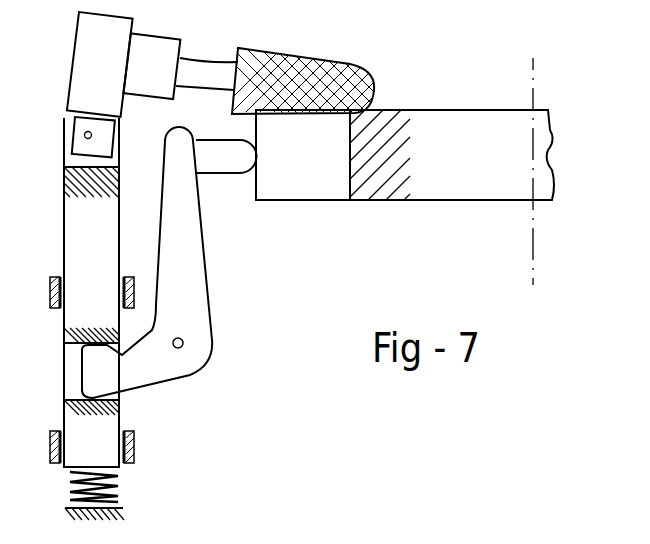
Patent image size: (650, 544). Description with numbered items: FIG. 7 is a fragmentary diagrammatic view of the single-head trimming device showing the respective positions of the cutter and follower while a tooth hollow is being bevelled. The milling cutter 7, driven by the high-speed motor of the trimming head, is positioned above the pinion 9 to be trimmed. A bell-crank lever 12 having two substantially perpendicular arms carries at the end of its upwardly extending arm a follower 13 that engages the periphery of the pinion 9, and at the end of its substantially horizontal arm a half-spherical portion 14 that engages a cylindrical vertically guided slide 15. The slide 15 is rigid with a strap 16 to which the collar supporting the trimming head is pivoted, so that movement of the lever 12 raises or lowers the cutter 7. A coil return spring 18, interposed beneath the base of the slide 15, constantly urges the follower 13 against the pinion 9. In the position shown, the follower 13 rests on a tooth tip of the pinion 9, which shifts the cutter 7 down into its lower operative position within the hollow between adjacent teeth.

The milling cutter 7 is at (331, 80).
The pinion 9 is at (412, 108).
The bell-crank lever 12 is at (212, 334).
The follower 13 is at (218, 165).
The half-spherical portion 14 is at (120, 397).
The cylindrical slide 15 is at (78, 305).
The strap 16 is at (67, 162).
The coil return spring 18 is at (118, 499).